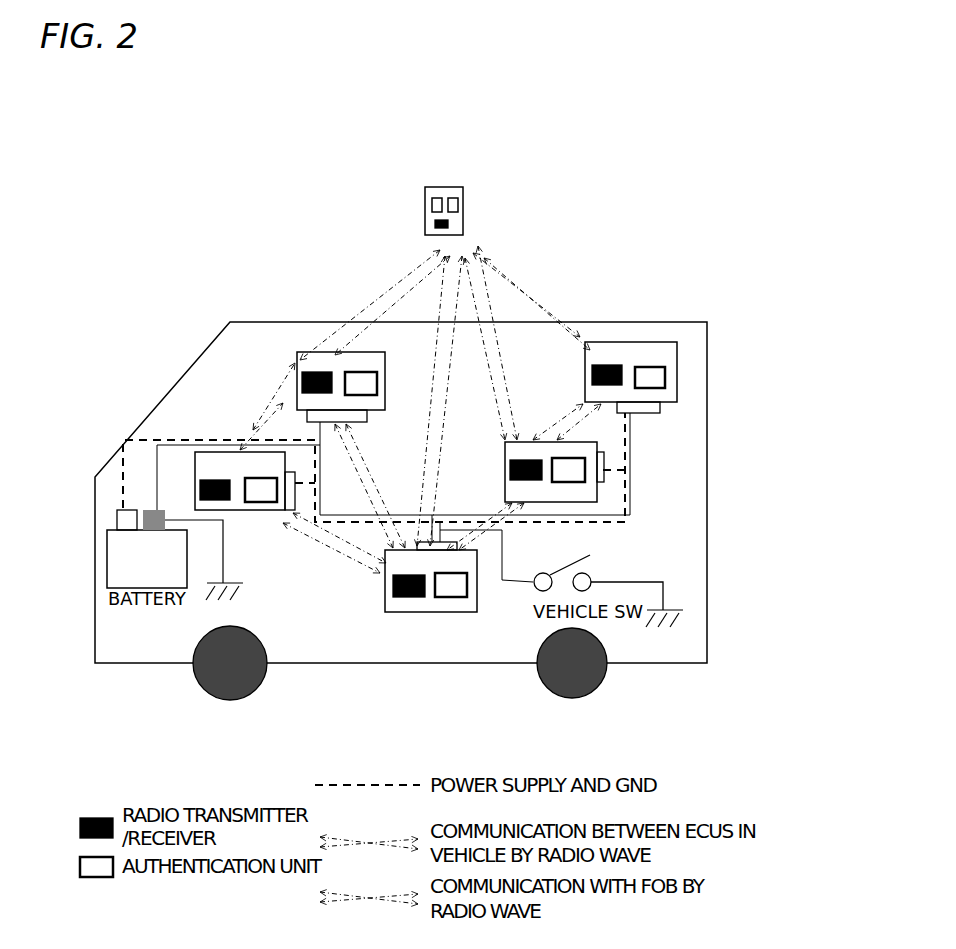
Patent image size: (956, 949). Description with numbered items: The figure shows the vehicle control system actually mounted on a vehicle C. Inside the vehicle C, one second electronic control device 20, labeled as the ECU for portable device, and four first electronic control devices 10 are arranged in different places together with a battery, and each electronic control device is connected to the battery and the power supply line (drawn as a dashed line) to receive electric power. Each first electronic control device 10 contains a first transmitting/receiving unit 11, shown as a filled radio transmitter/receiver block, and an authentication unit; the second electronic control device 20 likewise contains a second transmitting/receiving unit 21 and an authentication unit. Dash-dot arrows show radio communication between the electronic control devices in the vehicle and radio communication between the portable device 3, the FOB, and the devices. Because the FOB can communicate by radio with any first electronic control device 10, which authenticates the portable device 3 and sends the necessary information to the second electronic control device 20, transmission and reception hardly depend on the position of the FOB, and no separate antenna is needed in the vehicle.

The portable device 3 is at (465, 217).
The first electronic control device 10 is at (302, 365).
The first transmitting/receiving unit 11 is at (300, 380).
The second electronic control device 20 is at (432, 613).
The second transmitting/receiving unit 21 is at (410, 597).
The vehicle C is at (708, 332).